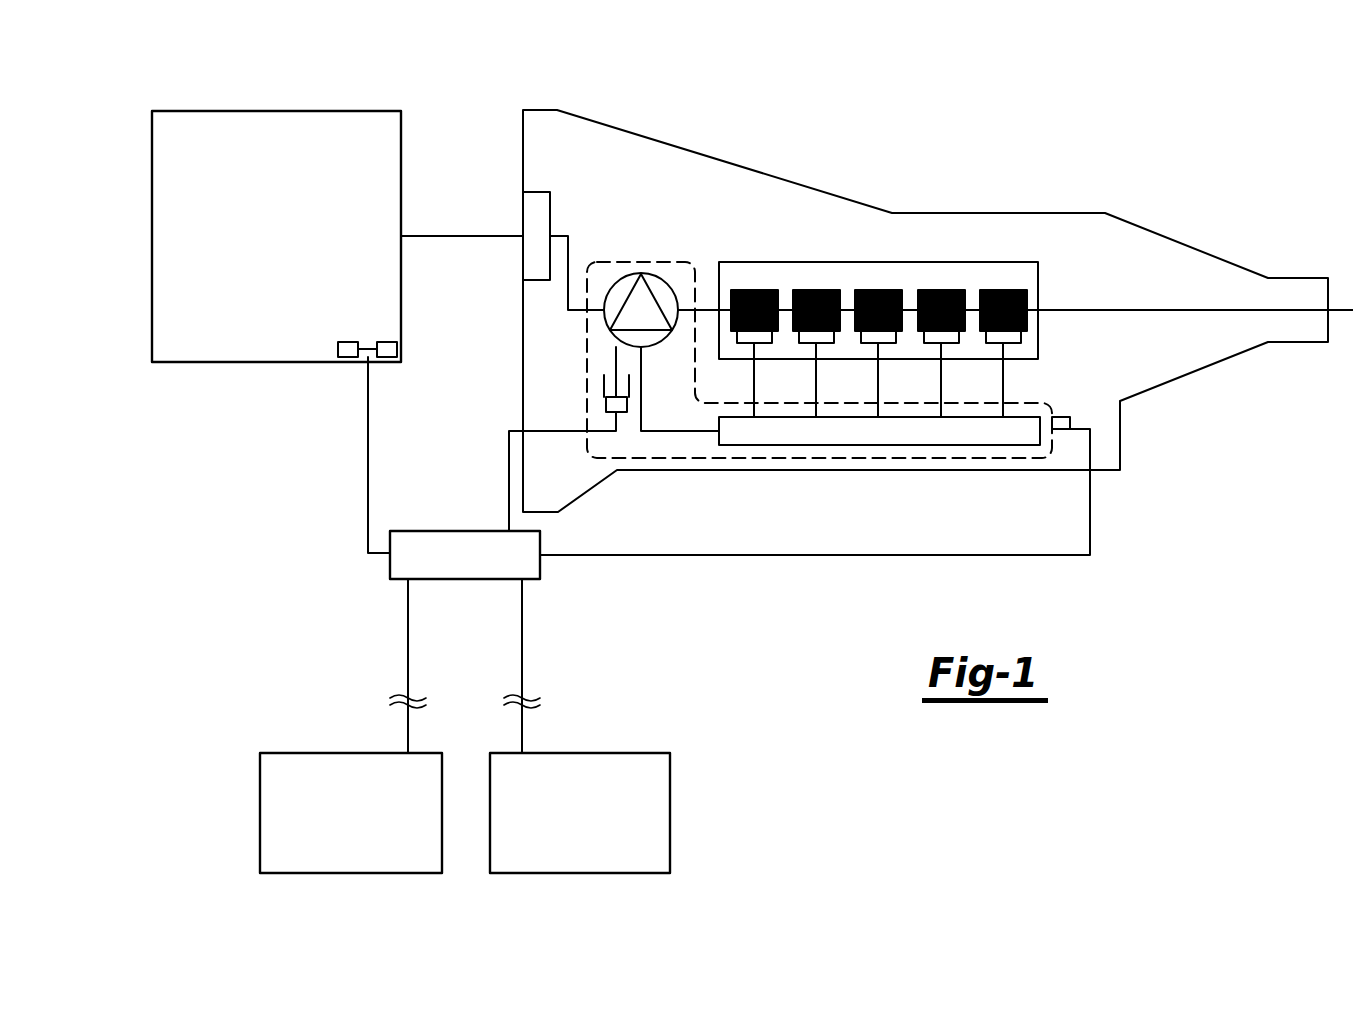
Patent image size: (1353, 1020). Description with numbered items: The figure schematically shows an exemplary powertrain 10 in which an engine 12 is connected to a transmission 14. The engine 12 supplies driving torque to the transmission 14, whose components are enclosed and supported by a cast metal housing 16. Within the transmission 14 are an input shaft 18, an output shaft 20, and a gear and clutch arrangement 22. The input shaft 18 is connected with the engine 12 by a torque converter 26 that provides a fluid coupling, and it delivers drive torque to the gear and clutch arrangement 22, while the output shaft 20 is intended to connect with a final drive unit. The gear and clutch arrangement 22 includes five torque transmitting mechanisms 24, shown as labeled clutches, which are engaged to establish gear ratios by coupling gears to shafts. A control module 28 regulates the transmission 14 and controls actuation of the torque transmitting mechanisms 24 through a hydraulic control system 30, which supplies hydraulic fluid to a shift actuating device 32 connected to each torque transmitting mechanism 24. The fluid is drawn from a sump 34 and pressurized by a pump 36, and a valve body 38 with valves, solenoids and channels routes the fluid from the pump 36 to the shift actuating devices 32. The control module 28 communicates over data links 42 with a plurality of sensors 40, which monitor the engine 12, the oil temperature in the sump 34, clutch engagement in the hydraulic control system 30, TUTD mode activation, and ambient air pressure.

The powertrain 10 is at (961, 116).
The engine 12 is at (290, 247).
The transmission 14 is at (1092, 204).
The housing 16 is at (1048, 213).
The input shaft 18 is at (462, 236).
The output shaft 20 is at (1117, 310).
The gear and clutch arrangement 22 is at (847, 232).
The torque transmitting mechanisms 24 is at (816, 290).
The torque converter 26 is at (540, 192).
The control module 28 is at (390, 565).
The hydraulic control system 30 is at (667, 460).
The shift actuating device 32 is at (762, 343).
The sump 34 is at (604, 385).
The pump 36 is at (660, 275).
The valve body 38 is at (805, 445).
The sensors 40 is at (388, 342).
The data links 42 is at (509, 455).